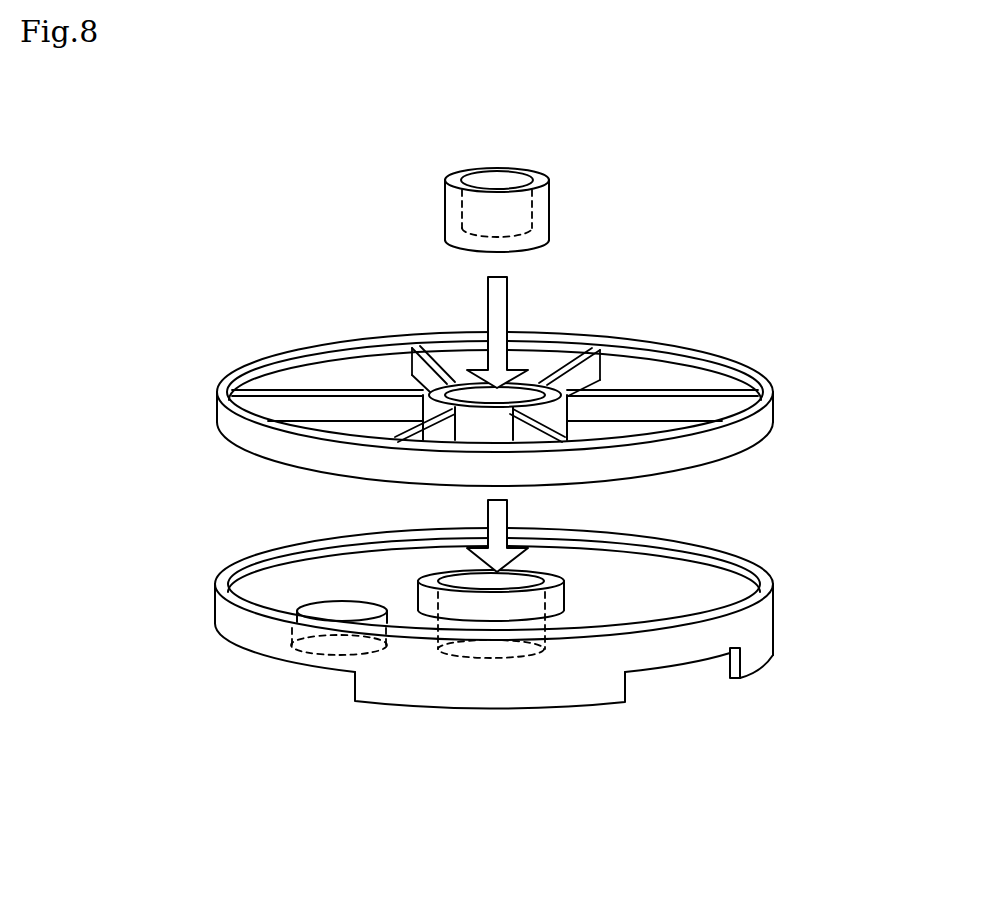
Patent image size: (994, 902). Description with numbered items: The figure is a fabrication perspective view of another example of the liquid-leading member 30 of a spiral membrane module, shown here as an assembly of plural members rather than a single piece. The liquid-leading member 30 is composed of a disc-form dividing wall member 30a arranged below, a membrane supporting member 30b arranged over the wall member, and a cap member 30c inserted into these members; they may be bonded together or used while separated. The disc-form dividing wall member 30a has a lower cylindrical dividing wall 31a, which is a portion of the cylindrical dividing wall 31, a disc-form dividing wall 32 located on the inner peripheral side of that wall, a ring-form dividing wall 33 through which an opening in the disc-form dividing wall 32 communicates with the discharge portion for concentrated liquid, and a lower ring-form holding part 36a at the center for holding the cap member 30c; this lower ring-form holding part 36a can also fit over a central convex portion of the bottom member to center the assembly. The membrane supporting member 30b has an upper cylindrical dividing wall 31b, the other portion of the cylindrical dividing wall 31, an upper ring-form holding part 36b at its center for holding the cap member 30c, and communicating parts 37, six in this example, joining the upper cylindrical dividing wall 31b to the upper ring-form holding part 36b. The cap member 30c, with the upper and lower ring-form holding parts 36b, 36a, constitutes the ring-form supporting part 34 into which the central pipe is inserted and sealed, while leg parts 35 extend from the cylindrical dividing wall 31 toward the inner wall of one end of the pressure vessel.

The liquid-leading member 30 is at (818, 165).
The disc-form dividing wall member 30a is at (730, 548).
The membrane supporting member 30b is at (731, 357).
The cap member 30c is at (553, 213).
The cylindrical dividing wall 31 is at (122, 437).
The lower cylindrical dividing wall 31a is at (217, 583).
The upper cylindrical dividing wall 31b is at (218, 432).
The disc-form dividing wall 32 is at (300, 590).
The ring-form dividing wall 33 is at (378, 618).
The ring-form supporting part 34 is at (437, 215).
The leg parts 35 is at (640, 695).
The lower ring-form holding part 36a is at (568, 590).
The upper ring-form holding part 36b is at (601, 382).
The communicating parts 37 is at (650, 388).